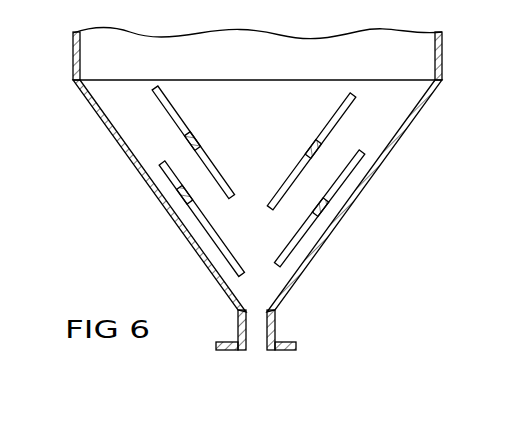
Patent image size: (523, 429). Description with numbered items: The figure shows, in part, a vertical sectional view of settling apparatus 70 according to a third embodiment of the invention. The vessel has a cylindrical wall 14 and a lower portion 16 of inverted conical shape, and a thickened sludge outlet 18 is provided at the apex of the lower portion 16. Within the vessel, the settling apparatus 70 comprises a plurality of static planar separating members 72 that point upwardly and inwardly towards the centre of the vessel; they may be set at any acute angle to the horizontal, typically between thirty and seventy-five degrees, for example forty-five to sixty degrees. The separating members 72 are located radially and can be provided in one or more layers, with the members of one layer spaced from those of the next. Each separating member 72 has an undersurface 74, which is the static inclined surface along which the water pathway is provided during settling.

The cylindrical wall 14 is at (440, 63).
The lower portion 16 is at (340, 222).
The thickened sludge outlet 18 is at (275, 328).
The settling apparatus 70 is at (390, 248).
The static planar separating member 72 is at (297, 168).
The undersurface 74 is at (167, 113).